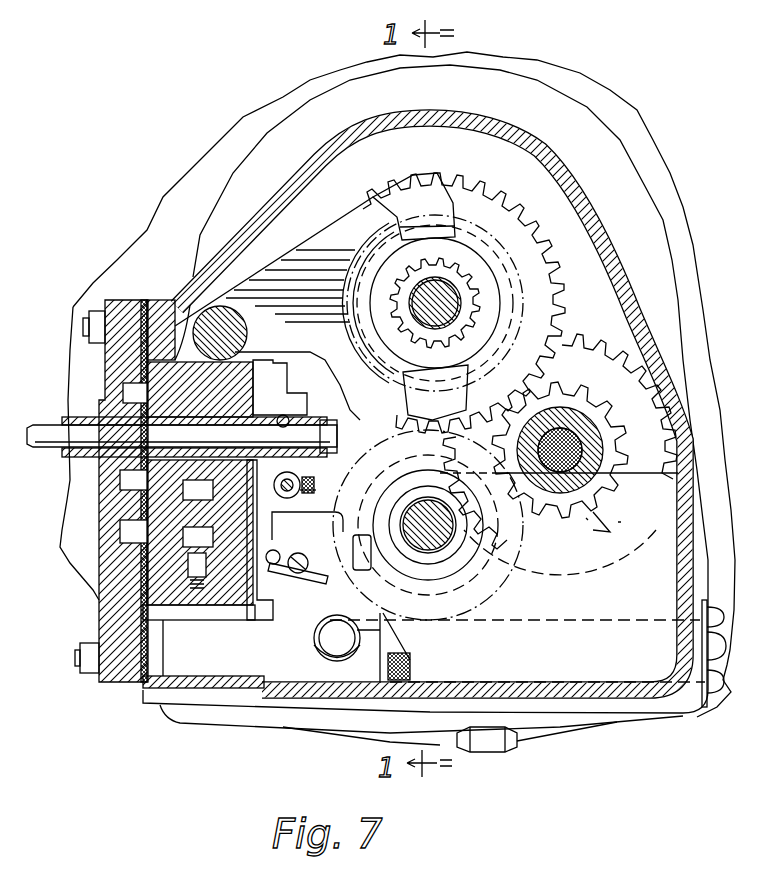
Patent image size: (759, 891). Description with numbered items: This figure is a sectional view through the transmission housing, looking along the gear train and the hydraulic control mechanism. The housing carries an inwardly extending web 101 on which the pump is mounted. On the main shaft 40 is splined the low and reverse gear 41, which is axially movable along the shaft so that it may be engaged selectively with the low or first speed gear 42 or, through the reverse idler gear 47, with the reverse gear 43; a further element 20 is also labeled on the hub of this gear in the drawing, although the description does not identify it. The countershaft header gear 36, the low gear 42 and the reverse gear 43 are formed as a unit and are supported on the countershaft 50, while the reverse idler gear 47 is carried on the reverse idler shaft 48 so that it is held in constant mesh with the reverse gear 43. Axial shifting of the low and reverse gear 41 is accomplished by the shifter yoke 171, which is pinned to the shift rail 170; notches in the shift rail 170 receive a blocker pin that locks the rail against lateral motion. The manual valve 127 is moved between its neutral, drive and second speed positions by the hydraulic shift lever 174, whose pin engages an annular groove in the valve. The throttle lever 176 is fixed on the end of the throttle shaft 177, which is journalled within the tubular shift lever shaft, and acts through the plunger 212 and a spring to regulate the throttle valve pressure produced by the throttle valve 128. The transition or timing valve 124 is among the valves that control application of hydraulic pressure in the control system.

The inwardly extending web 101 is at (524, 146).
The low and reverse gear 41 is at (520, 232).
The shaft 20 is at (455, 303).
The main shaft 40 is at (398, 272).
The countershaft header gear 36 is at (592, 338).
The countershaft 50 is at (583, 403).
The low or first speed gear 42 is at (617, 423).
The shift rail 170 is at (222, 308).
The shifter yoke 171 is at (283, 282).
The hydraulic shift lever 174 is at (340, 418).
The throttle shaft 177 is at (57, 447).
The manual valve 127 is at (295, 477).
The throttle valve 128 is at (313, 490).
The throttle lever 176 is at (300, 566).
The transition or timing valve 124 is at (198, 600).
The plunger 212 is at (250, 618).
The reverse idler shaft 48 is at (438, 545).
The reverse idler gear 47 is at (525, 512).
The reverse gear 43 is at (569, 505).